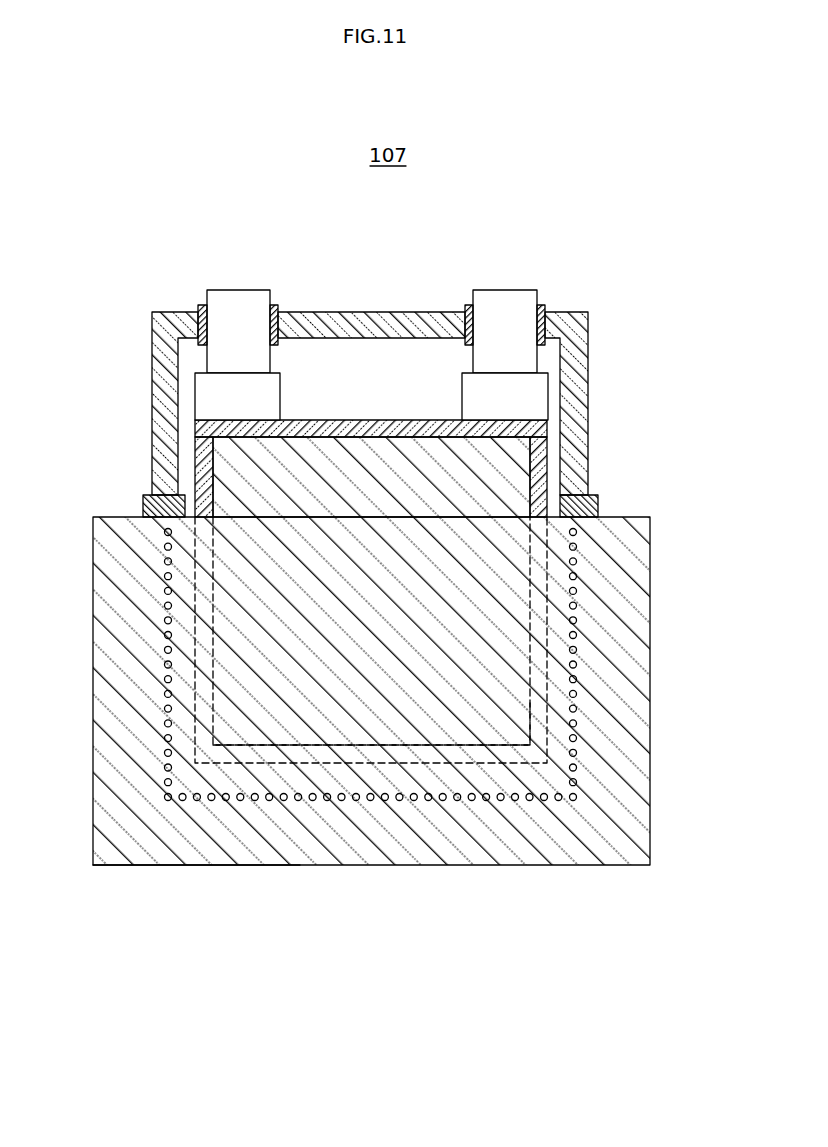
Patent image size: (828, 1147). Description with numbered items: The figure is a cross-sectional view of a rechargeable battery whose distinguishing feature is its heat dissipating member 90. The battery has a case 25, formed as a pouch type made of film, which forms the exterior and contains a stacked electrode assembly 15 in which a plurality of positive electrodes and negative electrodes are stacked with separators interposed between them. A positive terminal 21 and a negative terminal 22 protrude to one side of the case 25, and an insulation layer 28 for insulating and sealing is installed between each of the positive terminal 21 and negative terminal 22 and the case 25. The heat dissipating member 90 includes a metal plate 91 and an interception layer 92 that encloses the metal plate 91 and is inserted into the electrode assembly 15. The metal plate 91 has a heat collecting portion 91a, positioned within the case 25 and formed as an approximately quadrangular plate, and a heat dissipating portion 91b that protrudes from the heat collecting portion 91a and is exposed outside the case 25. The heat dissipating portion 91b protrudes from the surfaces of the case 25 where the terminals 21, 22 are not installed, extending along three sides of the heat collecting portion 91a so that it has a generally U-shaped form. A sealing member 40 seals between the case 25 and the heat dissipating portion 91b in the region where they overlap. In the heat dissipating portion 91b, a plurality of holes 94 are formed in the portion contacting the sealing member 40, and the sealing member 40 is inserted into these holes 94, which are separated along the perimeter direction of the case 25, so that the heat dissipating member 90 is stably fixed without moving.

The heat dissipating member 90 is at (389, 870).
The electrode assembly 15 is at (546, 470).
The interception layer 92 is at (192, 428).
The metal plate 91 is at (225, 458).
The heat collecting portion 91a is at (502, 750).
The heat dissipating portion 91b is at (182, 848).
The case 25 is at (585, 418).
The positive terminal 21 is at (226, 301).
The negative terminal 22 is at (504, 301).
The insulation layer 28 is at (276, 305).
The sealing member 40 is at (146, 505).
The holes 94 is at (298, 802).